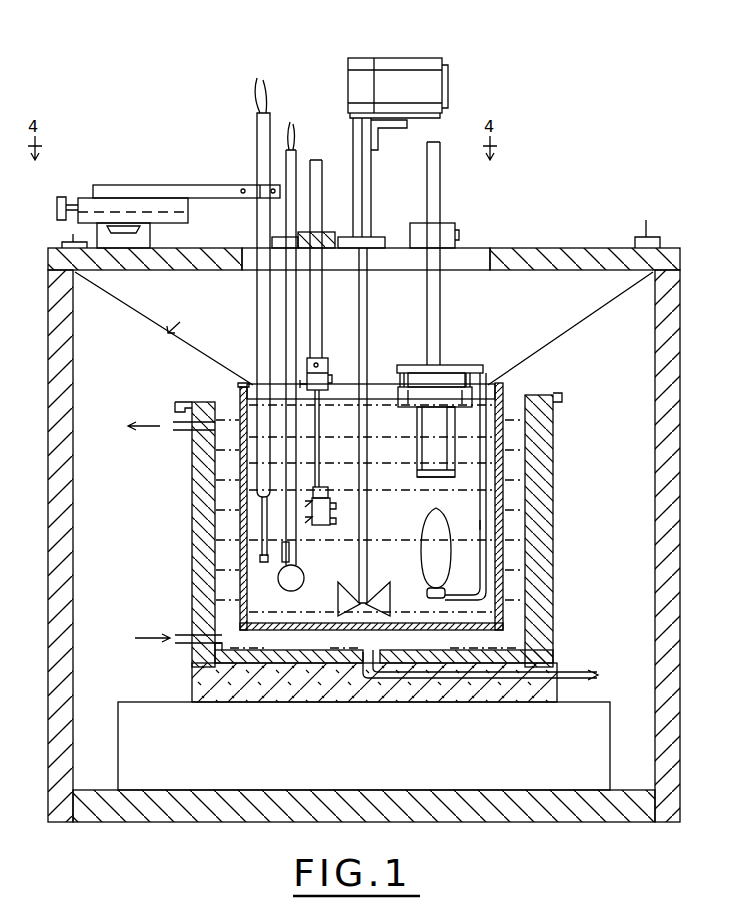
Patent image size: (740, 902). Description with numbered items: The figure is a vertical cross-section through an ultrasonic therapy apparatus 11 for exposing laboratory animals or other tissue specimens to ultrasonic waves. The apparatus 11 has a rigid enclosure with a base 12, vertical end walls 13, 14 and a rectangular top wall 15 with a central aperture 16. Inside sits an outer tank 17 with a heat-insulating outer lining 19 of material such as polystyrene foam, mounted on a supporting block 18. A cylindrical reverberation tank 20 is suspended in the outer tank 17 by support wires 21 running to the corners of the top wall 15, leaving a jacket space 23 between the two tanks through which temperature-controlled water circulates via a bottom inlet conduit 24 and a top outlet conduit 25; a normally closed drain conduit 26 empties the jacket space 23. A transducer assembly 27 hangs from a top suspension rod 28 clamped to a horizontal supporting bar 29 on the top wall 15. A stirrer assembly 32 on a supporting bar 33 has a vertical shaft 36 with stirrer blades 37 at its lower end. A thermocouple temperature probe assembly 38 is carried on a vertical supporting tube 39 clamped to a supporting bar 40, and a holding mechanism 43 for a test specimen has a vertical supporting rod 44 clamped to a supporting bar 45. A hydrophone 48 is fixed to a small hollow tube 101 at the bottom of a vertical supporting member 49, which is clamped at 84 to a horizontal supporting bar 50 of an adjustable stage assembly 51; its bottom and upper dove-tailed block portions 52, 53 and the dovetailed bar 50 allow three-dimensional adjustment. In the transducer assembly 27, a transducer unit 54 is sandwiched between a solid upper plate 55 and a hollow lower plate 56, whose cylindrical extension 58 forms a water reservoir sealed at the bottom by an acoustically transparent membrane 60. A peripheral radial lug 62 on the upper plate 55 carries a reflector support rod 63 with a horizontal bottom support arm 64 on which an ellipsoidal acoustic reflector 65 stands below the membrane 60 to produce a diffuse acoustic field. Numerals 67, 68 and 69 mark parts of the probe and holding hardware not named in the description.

The ultrasonic therapy apparatus 11 is at (589, 182).
The base 12 is at (528, 808).
The vertical end wall 13 is at (74, 516).
The vertical end wall 14 is at (655, 540).
The top wall 15 is at (572, 247).
The central aperture 16 is at (480, 247).
The outer tank 17 is at (553, 497).
The supporting block 18 is at (365, 759).
The heat-insulating outer lining 19 is at (553, 555).
The reverberation tank 20 is at (240, 574).
The support wires 21 is at (185, 347).
The jacket space 23 is at (228, 483).
The bottom inlet conduit 24 is at (190, 646).
The top outlet conduit 25 is at (178, 434).
The drain conduit 26 is at (566, 672).
The transducer assembly 27 is at (394, 391).
The top suspension rod 28 is at (427, 297).
The horizontal supporting bar 29 is at (447, 223).
The stirrer assembly 32 is at (347, 48).
The horizontal supporting bar 33 is at (382, 237).
The vertical shaft 36 is at (369, 318).
The stirrer blades 37 is at (382, 590).
The thermocouple temperature probe assembly 38 is at (306, 564).
The vertical supporting tube 39 is at (289, 330).
The horizontal supporting bar 40 is at (281, 237).
The holding mechanism 43 is at (330, 353).
The vertical supporting rod 44 is at (321, 318).
The horizontal supporting bar 45 is at (333, 233).
The hydrophone 48 is at (264, 566).
The vertical supporting member 49 is at (256, 318).
The horizontal supporting bar 50 is at (220, 184).
The adjustable stage assembly 51 is at (98, 175).
The bottom dove-tailed block portion 52 is at (150, 238).
The upper dove-tailed block portion 53 is at (190, 210).
The transducer unit 54 is at (420, 380).
The upper plate 55 is at (447, 365).
The lower plate 56 is at (462, 406).
The cylindrical extension 58 is at (428, 444).
The membrane 60 is at (422, 478).
The peripheral radial lug 62 is at (482, 365).
The reflector support rod 63 is at (481, 530).
The bottom support arm 64 is at (456, 590).
The acoustic reflector 65 is at (446, 530).
The sensor lead 67 is at (322, 396).
The sensor body 68 is at (325, 496).
The sensor rod 69 is at (320, 462).
The clamp 84 is at (258, 197).
The small hollow tube 101 is at (266, 538).